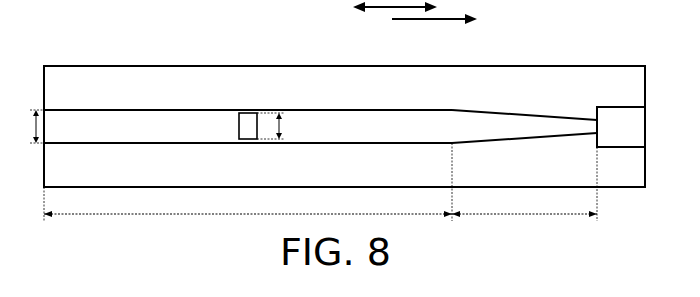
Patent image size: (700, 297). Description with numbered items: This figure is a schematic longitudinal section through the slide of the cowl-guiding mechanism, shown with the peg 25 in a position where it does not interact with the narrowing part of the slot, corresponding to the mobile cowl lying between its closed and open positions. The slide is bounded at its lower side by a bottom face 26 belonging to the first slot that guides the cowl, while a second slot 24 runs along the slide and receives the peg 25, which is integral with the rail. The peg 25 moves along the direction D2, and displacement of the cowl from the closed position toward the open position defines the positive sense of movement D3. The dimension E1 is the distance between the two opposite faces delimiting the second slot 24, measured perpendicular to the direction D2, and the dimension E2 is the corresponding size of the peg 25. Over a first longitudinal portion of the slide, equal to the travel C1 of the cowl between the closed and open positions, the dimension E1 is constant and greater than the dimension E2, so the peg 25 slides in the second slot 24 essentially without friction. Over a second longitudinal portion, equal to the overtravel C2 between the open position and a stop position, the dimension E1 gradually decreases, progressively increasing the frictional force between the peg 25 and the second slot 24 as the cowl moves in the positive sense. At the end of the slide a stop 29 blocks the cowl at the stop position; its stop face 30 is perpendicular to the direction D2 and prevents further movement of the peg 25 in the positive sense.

The second slot 24 is at (79, 125).
The peg 25 is at (244, 114).
The bottom face 26 is at (136, 78).
The stop 29 is at (617, 106).
The stop face 30 is at (595, 121).
The dimension of the second slot E1 is at (26, 126).
The dimension of the peg E2 is at (282, 126).
The travel C1 is at (248, 182).
The overtravel C2 is at (524, 184).
The direction of movement D2 is at (390, 12).
The positive sense of movement D3 is at (434, 24).